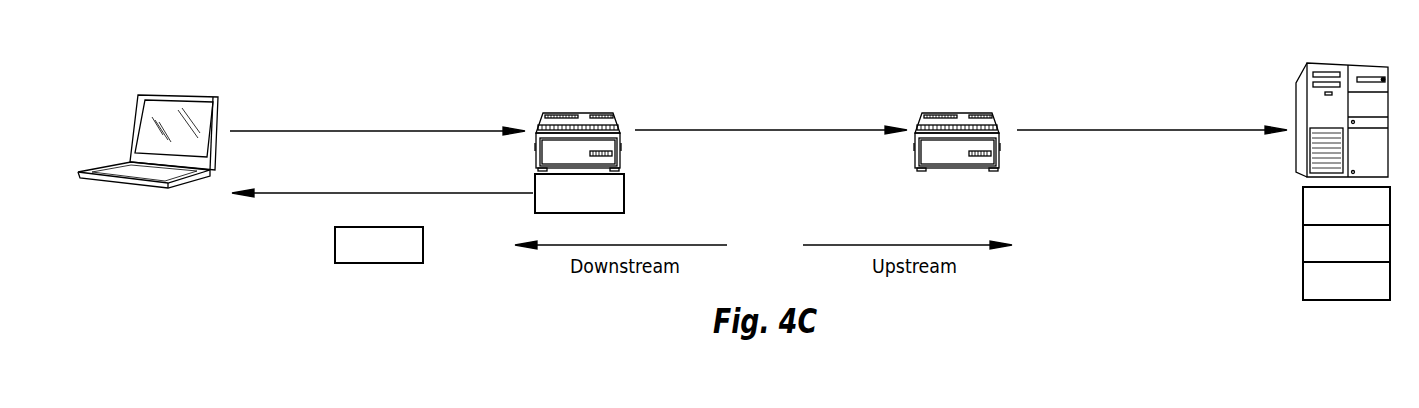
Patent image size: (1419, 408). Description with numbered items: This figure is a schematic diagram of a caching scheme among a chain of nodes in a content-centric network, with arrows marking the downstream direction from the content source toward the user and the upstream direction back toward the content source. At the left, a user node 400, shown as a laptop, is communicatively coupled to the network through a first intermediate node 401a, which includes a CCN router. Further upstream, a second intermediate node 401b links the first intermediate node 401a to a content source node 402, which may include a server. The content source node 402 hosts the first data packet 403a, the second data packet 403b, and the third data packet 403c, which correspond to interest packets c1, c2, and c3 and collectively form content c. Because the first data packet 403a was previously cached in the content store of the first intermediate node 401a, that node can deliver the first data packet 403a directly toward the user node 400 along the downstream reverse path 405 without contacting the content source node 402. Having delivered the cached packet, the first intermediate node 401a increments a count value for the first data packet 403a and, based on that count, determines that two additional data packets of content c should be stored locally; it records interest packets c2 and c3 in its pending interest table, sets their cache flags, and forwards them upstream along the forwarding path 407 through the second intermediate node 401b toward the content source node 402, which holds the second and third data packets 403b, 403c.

The user node 400 is at (192, 94).
The first intermediate node 401a is at (590, 113).
The second intermediate node 401b is at (970, 113).
The content source node 402 is at (1332, 63).
The first data packet 403a is at (402, 260).
The second data packet 403b is at (1368, 256).
The third data packet 403c is at (1368, 292).
The reverse path 405 is at (372, 193).
The forwarding path 407 is at (372, 131).